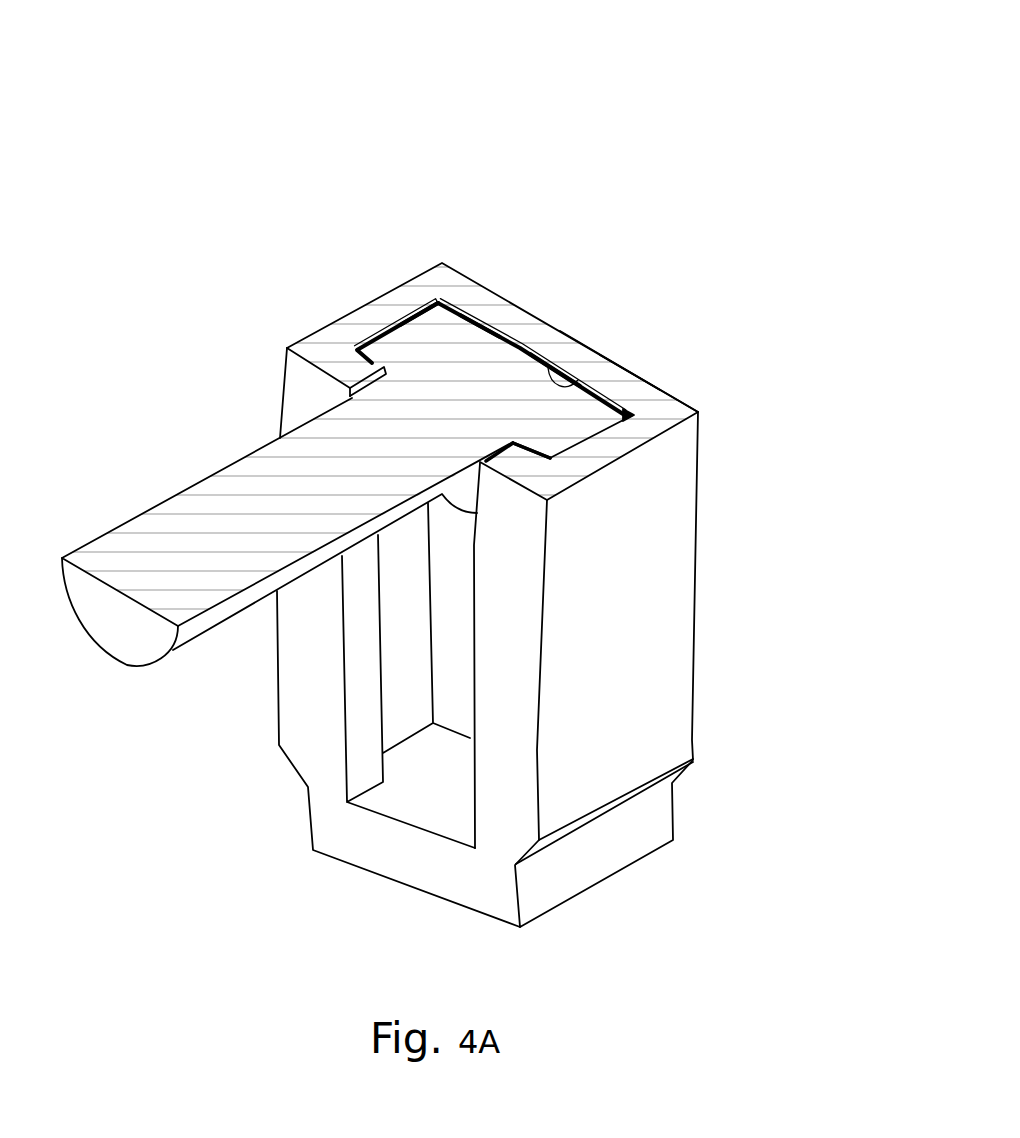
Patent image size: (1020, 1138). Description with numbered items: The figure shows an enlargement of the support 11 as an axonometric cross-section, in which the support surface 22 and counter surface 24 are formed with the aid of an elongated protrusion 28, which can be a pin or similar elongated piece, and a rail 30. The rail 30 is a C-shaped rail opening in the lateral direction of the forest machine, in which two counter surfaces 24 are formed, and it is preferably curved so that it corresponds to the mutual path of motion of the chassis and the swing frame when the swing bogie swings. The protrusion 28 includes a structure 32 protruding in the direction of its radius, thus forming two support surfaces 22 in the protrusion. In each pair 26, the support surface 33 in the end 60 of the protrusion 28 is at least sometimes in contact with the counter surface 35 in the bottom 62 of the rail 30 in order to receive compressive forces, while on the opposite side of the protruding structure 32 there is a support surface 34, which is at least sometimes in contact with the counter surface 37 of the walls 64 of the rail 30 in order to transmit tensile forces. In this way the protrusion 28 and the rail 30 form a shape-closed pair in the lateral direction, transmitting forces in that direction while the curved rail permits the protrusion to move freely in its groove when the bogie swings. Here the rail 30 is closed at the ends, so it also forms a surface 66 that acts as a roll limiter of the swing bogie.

The support 11 is at (566, 196).
The support surface 22 is at (616, 371).
The counter surface 24 is at (583, 444).
The pair 26 is at (260, 220).
The elongated protrusion 28 is at (255, 475).
The rail 30 is at (586, 738).
The protruding structure 32 is at (394, 339).
The support surface 33 is at (480, 316).
The support surface 34 is at (358, 362).
The counter surface 35 is at (612, 392).
The counter surface 37 is at (523, 484).
The end 60 is at (510, 358).
The bottom 62 is at (552, 346).
The walls 64 is at (544, 470).
The surface 66 is at (433, 783).